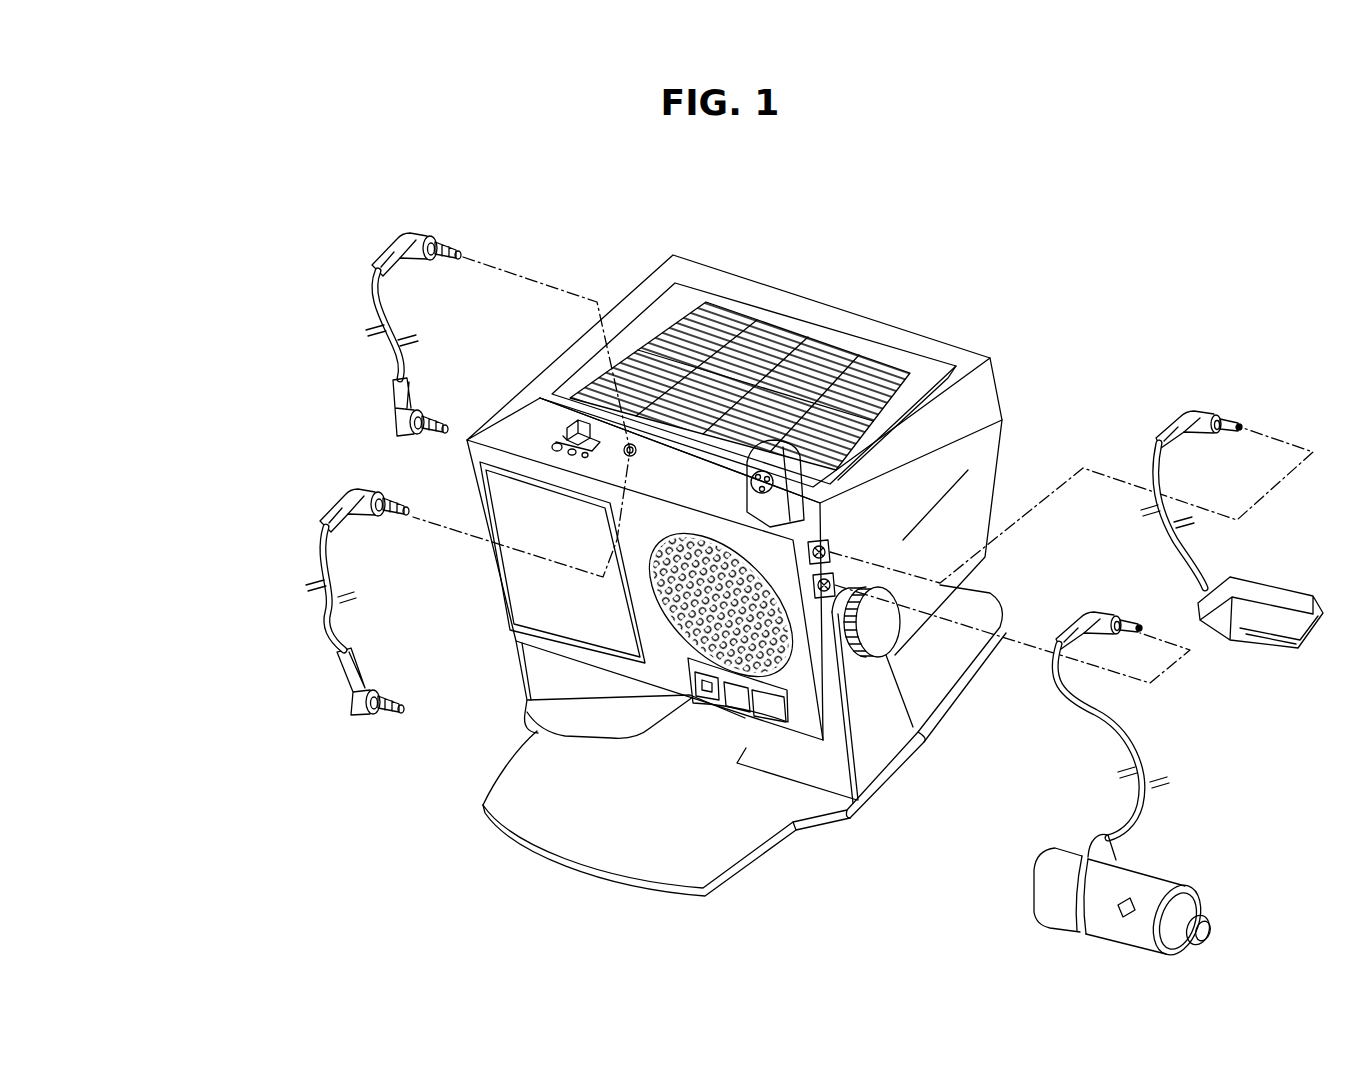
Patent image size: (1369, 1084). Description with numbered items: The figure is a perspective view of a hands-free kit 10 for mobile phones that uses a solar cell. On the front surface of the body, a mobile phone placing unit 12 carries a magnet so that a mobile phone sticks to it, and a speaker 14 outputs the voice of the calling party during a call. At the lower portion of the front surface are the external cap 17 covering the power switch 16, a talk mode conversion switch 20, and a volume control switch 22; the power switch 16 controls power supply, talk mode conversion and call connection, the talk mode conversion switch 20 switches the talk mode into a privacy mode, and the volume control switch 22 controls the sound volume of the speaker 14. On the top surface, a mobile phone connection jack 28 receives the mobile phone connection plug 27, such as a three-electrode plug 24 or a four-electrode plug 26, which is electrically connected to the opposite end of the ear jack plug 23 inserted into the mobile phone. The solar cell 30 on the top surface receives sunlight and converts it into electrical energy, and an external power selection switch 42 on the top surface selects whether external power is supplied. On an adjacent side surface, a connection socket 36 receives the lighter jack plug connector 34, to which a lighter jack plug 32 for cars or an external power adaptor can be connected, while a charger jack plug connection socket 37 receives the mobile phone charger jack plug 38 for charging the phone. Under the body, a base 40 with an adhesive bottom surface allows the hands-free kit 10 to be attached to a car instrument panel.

The hands-free kit 10 is at (840, 278).
The mobile phone placing unit 12 is at (527, 604).
The speaker 14 is at (535, 732).
The power switch 16 is at (705, 700).
The external cap 17 is at (692, 692).
The talk mode conversion switch 20 is at (740, 708).
The volume control switch 22 is at (773, 712).
The ear jack plug 23 is at (396, 428).
The three-electrode plug 24 is at (296, 532).
The four-electrode plug 26 is at (371, 450).
The mobile phone connection plug 27 is at (432, 229).
The mobile phone connection jack 28 is at (627, 445).
The solar cell 30 is at (703, 330).
The lighter jack plug 32 is at (1143, 888).
The lighter jack plug connector 34 is at (1093, 610).
The connection socket 36 is at (877, 597).
The charger jack plug connection socket 37 is at (828, 531).
The mobile phone charger jack plug 38 is at (1197, 412).
The base 40 is at (570, 832).
The external power selection switch 42 is at (565, 423).